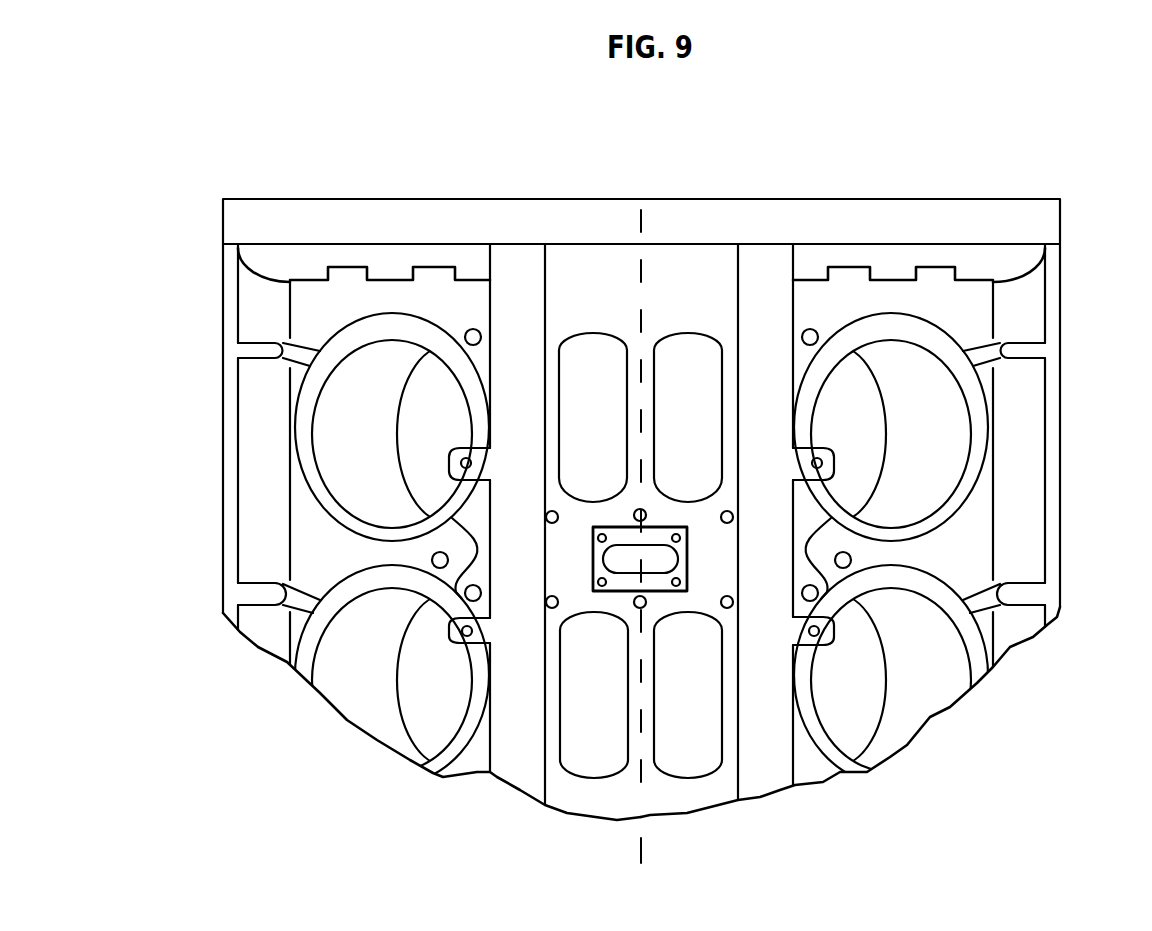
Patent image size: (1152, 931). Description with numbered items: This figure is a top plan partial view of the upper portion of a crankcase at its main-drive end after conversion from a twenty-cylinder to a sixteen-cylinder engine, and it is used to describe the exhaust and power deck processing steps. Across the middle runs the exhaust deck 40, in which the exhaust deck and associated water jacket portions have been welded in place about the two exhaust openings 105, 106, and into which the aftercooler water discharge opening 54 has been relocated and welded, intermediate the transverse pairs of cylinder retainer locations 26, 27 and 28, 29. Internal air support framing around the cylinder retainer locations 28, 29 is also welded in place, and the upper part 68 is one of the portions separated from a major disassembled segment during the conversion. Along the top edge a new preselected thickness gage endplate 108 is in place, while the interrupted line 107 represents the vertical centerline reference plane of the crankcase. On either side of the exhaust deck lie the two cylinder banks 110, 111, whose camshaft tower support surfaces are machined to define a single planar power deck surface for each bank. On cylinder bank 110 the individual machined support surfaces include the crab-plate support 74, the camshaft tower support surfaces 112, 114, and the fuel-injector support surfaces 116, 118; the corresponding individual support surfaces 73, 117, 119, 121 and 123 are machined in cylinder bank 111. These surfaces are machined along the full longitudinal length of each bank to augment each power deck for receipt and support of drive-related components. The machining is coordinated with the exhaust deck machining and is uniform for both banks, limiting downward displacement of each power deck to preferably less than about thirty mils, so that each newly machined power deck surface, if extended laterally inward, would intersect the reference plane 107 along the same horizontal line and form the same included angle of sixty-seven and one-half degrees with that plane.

The cylinder retainer location 26 is at (340, 686).
The cylinder retainer location 27 is at (910, 686).
The cylinder retainer location 28 is at (338, 414).
The cylinder retainer location 29 is at (905, 414).
The exhaust deck 40 is at (580, 812).
The aftercooler water discharge opening 54 is at (593, 567).
The upper part 68 is at (722, 265).
The crab-plate support 73 is at (925, 262).
The crab-plate support 74 is at (388, 262).
The exhaust opening 105 is at (597, 343).
The exhaust opening 106 is at (692, 348).
The interrupted line 107 is at (644, 846).
The endplate 108 is at (515, 215).
The cylinder bank 110 is at (410, 784).
The cylinder bank 111 is at (886, 784).
The camshaft tower support surface 112 is at (482, 476).
The camshaft tower support surface 114 is at (482, 644).
The fuel-injector support surface 116 is at (238, 348).
The individual support surface 117 is at (760, 475).
The fuel-injector support surface 118 is at (248, 597).
The individual support surface 119 is at (771, 644).
The individual support surface 121 is at (1033, 347).
The individual support surface 123 is at (1043, 595).